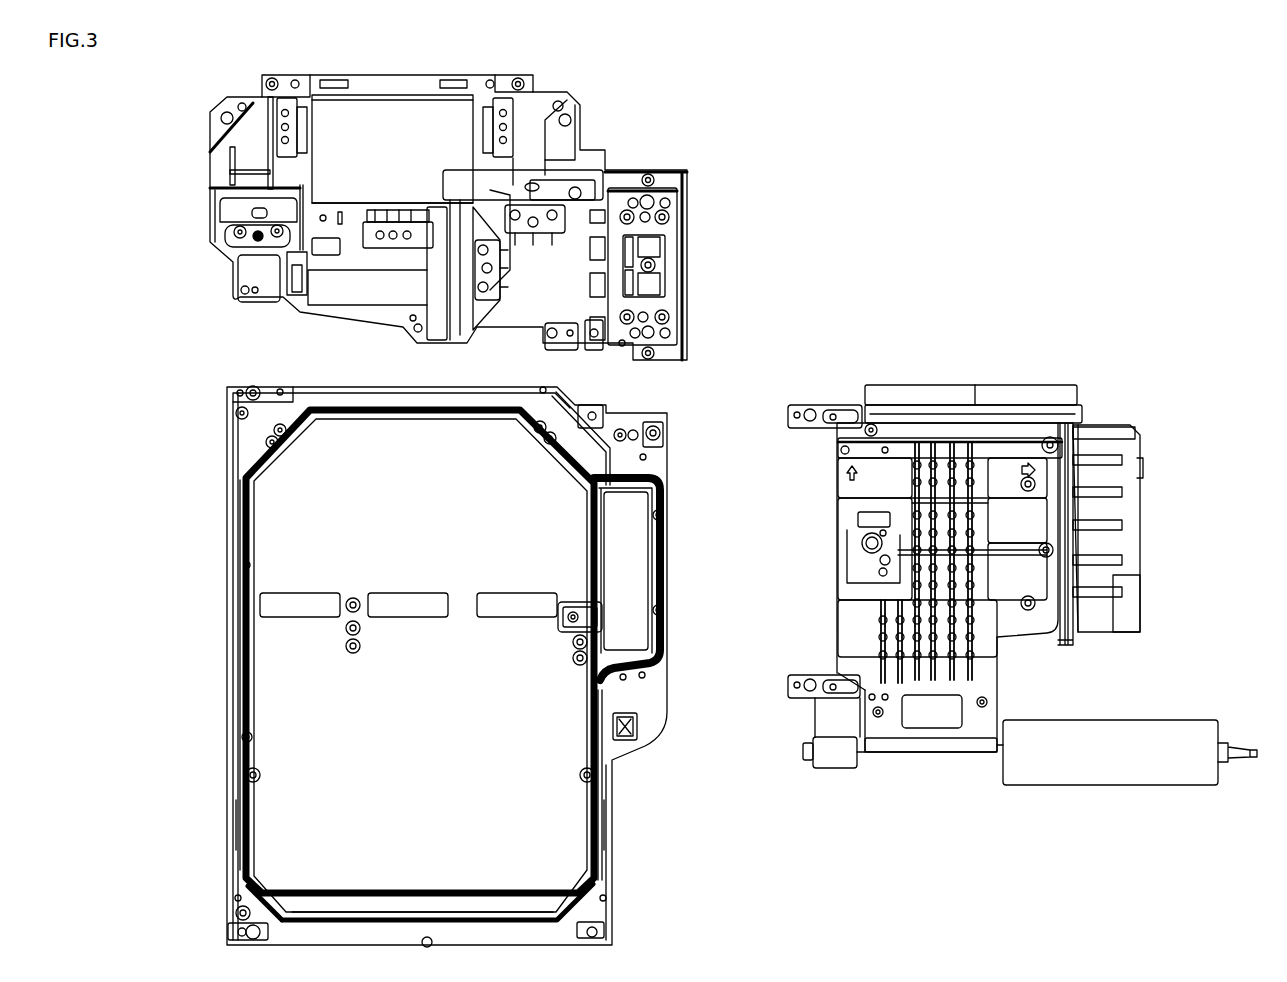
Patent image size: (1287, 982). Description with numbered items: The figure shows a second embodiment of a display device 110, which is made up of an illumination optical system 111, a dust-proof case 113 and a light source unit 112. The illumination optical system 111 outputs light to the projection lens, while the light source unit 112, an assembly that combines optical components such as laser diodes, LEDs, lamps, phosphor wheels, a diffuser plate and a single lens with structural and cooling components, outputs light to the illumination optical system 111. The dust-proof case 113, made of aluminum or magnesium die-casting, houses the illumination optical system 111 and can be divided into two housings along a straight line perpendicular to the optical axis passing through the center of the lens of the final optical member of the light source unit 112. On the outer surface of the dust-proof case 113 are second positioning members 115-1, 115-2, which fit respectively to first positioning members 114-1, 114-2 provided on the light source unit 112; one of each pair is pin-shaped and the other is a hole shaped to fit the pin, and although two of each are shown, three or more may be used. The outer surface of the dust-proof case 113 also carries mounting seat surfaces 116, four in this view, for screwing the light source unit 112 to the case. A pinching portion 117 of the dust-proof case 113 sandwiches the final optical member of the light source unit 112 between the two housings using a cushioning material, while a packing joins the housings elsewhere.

The display device 110 is at (1053, 165).
The illumination optical system 111 is at (666, 168).
The light source unit 112 is at (1094, 394).
The dust-proof case 113 is at (226, 575).
The first positioning member 114-1 is at (806, 404).
The first positioning member 114-2 is at (803, 750).
The second positioning member 115-1 is at (636, 428).
The second positioning member 115-2 is at (640, 740).
The mounting seat surface 116 is at (614, 447).
The pinching portion 117 is at (652, 555).